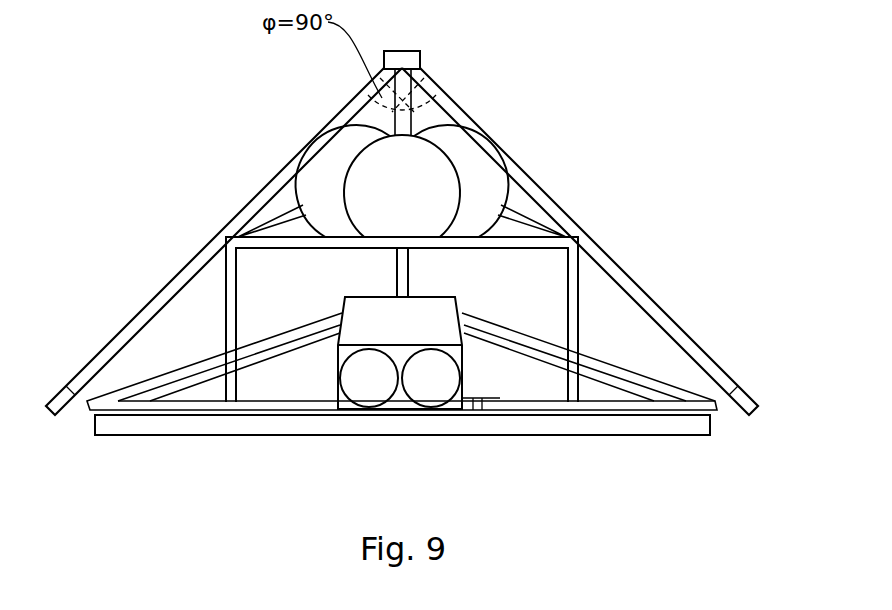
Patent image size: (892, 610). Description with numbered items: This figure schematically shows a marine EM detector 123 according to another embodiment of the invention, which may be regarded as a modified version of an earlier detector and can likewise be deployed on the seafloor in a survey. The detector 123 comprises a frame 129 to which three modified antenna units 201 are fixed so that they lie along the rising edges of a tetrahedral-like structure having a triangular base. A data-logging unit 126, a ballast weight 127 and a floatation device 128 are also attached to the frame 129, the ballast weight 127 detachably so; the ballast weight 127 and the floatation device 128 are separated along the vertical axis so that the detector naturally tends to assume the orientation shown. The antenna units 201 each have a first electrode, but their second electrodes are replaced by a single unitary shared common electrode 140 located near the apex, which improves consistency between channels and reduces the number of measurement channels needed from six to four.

The marine EM detector 123 is at (636, 215).
The data-logging unit 126 is at (399, 403).
The ballast weight 127 is at (598, 427).
The floatation device 128 is at (375, 190).
The frame 129 is at (582, 300).
The common electrode 140 is at (404, 50).
The modified antenna units 201 is at (361, 103).